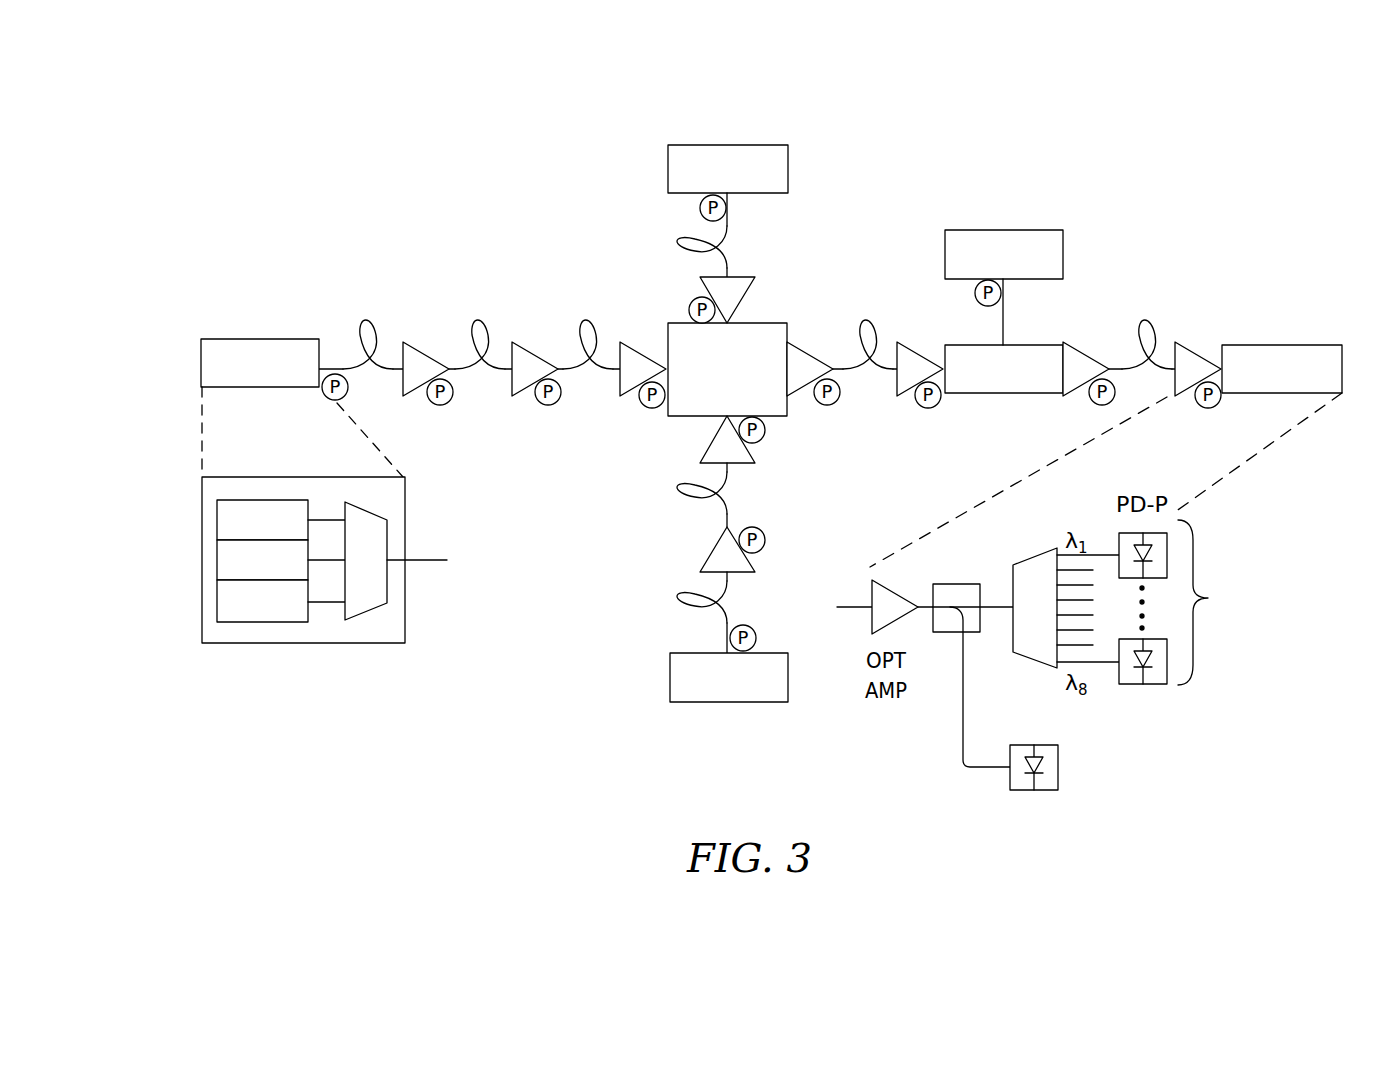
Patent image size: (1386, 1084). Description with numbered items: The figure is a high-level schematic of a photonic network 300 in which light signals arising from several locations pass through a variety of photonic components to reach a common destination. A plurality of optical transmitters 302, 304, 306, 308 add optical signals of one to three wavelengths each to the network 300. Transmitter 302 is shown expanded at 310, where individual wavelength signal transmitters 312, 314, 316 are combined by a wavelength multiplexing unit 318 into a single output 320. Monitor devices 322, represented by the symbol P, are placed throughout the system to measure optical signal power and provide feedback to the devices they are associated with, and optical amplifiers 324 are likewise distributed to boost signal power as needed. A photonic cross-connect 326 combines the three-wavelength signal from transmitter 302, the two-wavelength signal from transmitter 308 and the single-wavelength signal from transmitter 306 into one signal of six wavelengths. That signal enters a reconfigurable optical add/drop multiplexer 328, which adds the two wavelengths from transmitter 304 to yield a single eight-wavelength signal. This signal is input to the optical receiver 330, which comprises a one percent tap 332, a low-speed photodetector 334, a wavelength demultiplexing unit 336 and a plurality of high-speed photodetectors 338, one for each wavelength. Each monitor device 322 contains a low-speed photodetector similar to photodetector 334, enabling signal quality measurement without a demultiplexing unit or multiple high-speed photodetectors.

The photonic network 300 is at (1220, 203).
The optical transmitter 302 is at (261, 339).
The optical transmitter 304 is at (1003, 230).
The optical transmitter 306 is at (727, 702).
The optical transmitter 308 is at (725, 145).
The expanded view of transmitter 310 is at (310, 643).
The optical wavelength signal transmitter 312 is at (217, 517).
The optical wavelength signal transmitter 314 is at (217, 558).
The optical wavelength signal transmitter 316 is at (217, 600).
The wavelength multiplexing unit 318 is at (388, 532).
The single output 320 is at (430, 563).
The monitor device 322 is at (348, 393).
The optical amplifier 324 is at (426, 342).
The photonic cross-connect 326 is at (668, 416).
The reconfigurable optical add/drop multiplexer 328 is at (997, 393).
The optical receiver 330 is at (1284, 345).
The 1% tap 332 is at (975, 632).
The low-speed photodetector 334 is at (1058, 770).
The wavelength demultiplexing unit 336 is at (1035, 551).
The photodetectors 338 is at (1167, 550).